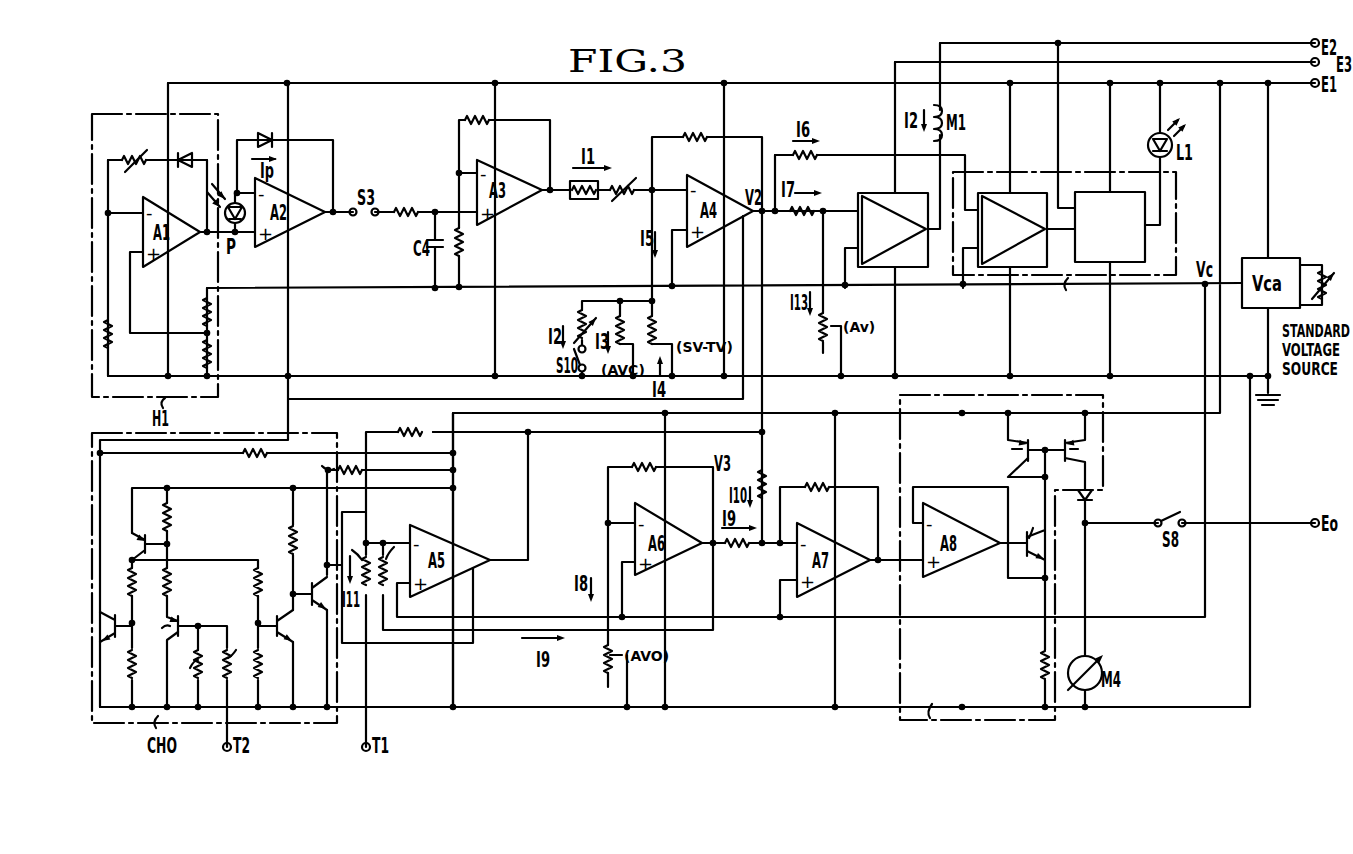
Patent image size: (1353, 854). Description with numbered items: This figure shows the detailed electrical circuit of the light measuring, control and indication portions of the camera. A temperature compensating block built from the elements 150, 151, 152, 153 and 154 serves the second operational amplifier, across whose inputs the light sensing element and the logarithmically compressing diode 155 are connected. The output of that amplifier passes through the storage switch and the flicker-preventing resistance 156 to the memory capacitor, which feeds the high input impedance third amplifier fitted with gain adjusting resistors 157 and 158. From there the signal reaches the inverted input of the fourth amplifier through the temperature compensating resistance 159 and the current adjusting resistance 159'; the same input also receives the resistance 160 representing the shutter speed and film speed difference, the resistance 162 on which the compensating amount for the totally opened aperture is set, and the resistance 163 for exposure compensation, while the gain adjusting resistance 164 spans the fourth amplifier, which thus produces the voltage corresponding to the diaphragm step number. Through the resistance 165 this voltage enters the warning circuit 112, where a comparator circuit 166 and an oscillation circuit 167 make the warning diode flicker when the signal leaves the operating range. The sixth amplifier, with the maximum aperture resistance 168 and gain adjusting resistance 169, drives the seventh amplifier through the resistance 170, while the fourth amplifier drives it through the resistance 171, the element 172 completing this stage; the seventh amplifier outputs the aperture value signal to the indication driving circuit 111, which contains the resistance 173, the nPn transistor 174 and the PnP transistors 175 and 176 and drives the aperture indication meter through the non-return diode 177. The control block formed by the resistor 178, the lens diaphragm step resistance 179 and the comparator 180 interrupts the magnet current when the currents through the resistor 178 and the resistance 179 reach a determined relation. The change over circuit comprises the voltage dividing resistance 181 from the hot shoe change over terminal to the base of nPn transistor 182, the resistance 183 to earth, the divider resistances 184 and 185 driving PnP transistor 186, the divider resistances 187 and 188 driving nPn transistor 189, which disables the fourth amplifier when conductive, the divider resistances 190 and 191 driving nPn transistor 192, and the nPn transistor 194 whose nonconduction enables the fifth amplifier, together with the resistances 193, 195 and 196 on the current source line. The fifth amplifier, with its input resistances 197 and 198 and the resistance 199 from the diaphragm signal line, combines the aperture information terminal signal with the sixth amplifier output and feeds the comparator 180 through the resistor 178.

The temperature compensating block element 150 is at (157, 152).
The temperature compensating block element 151 is at (183, 150).
The temperature compensating block element 152 is at (120, 338).
The temperature compensating block element 153 is at (194, 312).
The temperature compensating block element 154 is at (194, 356).
The diode 155 is at (263, 129).
The resistance for preventing flickering 156 is at (406, 199).
The gain adjusting resistor 157 is at (471, 242).
The gain adjusting resistor 158 is at (475, 108).
The temperature compensating resistance 159 is at (584, 201).
The current adjusting resistance 159' is at (623, 178).
The resistance 160 is at (663, 330).
The resistance 162 is at (630, 330).
The resistance 163 is at (574, 323).
The gain adjusting resistance 164 is at (692, 126).
The resistance 165 is at (804, 167).
The comparator circuit 166 is at (1012, 230).
The oscillation circuit 167 is at (1110, 227).
The resistance 168 is at (594, 658).
The gain adjusting resistance 169 is at (643, 456).
The resistance 170 is at (736, 555).
The resistance 171 is at (774, 481).
The light measuring circuit element 172 is at (816, 477).
The resistance 173 is at (1031, 664).
The nPn transistor 174 is at (1032, 534).
The PnP transistor 175 is at (1007, 451).
The PnP transistor 176 is at (1084, 452).
The non-return diode 177 is at (1097, 502).
The resistor 178 is at (801, 223).
The resistance 179 is at (811, 328).
The comparator 180 is at (893, 230).
The voltage dividing resistance 181 is at (239, 653).
The nPn transistor 182 is at (160, 626).
The voltage dividing resistance 183 is at (186, 676).
The resistance 184 is at (179, 582).
The resistance 185 is at (179, 517).
The PnP transistor 186 is at (136, 546).
The resistance 187 is at (120, 584).
The resistance 188 is at (144, 664).
The nPn transistor 189 is at (113, 637).
The voltage dividing resistance 190 is at (244, 582).
The voltage dividing resistance 191 is at (269, 664).
The nPn transistor 192 is at (296, 627).
The resistance 193 is at (281, 540).
The nPn transistor 194 is at (312, 586).
The resistance 195 is at (329, 466).
The resistance 196 is at (252, 464).
The amplifier A5 input resistance 197 is at (353, 556).
The amplifier A5 input resistance 198 is at (393, 553).
The resistance 199 is at (416, 422).
The indication driving circuit 111 is at (1001, 571).
The warning circuit 112 is at (1064, 245).